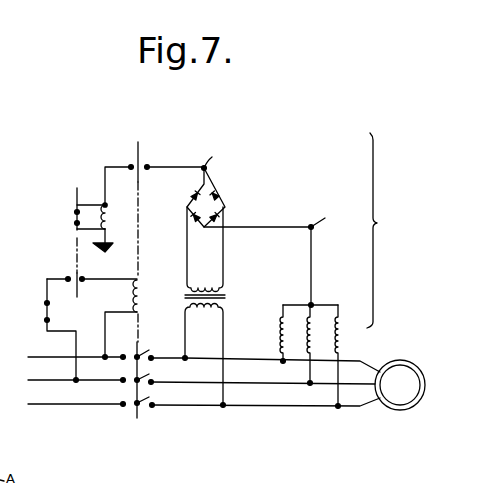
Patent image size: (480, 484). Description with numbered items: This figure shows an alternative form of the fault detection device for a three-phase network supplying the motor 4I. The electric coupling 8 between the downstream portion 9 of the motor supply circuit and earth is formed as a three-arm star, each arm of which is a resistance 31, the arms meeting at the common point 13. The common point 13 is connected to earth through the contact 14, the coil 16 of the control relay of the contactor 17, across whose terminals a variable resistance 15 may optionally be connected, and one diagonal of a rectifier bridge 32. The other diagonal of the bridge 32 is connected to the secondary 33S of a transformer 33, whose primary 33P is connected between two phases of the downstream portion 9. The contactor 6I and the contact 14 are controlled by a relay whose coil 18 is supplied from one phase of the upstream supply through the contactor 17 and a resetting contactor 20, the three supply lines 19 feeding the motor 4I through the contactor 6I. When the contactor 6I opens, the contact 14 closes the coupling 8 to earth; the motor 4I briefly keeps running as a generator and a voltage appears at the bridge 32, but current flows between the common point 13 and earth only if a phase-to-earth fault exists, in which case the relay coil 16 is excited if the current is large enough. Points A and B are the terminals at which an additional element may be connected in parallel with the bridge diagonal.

The auxiliary contact 14 is at (145, 163).
The variable resistance 15 is at (107, 222).
The relay coil 16 is at (72, 220).
The contactor 17 is at (82, 280).
The relay coil 18 is at (141, 298).
The resetting contactor 20 is at (45, 313).
The supply lines 19 is at (91, 399).
The contactor 6I is at (139, 353).
The rectifier bridge 32 is at (220, 205).
The transformer 33 is at (222, 300).
The secondary 33S is at (208, 288).
The primary 33P is at (205, 319).
The downstream portion of the supply circuit 9 is at (243, 398).
The resistance 31 is at (305, 320).
The common point 13 is at (334, 322).
The motor 4I is at (421, 396).
The electric coupling 8 is at (381, 230).
The point A is at (208, 157).
The point B is at (270, 219).